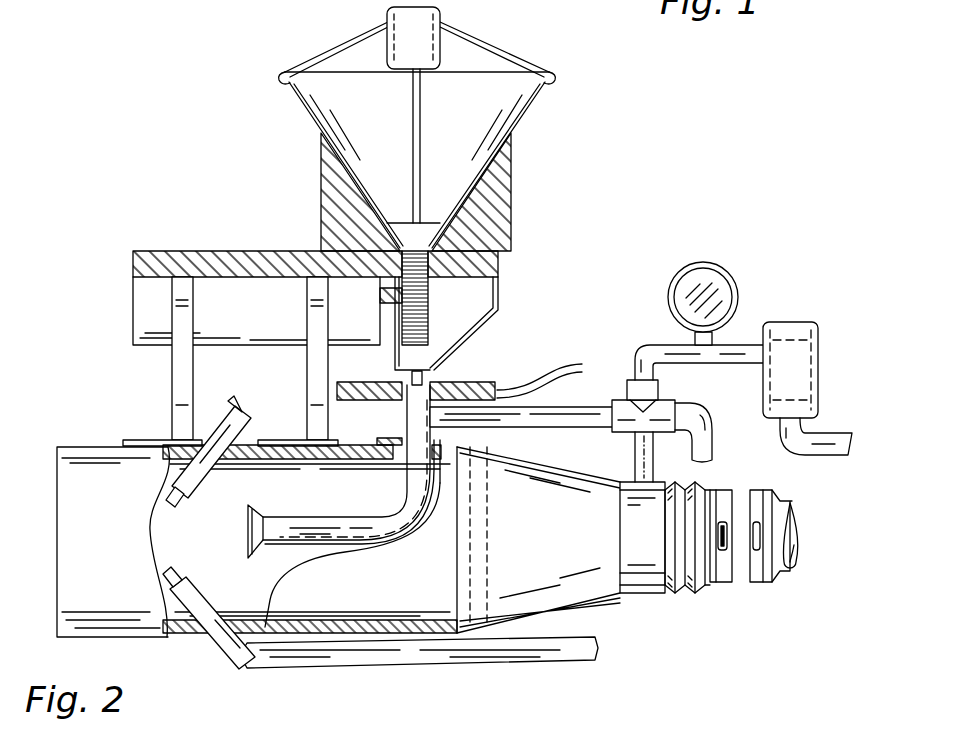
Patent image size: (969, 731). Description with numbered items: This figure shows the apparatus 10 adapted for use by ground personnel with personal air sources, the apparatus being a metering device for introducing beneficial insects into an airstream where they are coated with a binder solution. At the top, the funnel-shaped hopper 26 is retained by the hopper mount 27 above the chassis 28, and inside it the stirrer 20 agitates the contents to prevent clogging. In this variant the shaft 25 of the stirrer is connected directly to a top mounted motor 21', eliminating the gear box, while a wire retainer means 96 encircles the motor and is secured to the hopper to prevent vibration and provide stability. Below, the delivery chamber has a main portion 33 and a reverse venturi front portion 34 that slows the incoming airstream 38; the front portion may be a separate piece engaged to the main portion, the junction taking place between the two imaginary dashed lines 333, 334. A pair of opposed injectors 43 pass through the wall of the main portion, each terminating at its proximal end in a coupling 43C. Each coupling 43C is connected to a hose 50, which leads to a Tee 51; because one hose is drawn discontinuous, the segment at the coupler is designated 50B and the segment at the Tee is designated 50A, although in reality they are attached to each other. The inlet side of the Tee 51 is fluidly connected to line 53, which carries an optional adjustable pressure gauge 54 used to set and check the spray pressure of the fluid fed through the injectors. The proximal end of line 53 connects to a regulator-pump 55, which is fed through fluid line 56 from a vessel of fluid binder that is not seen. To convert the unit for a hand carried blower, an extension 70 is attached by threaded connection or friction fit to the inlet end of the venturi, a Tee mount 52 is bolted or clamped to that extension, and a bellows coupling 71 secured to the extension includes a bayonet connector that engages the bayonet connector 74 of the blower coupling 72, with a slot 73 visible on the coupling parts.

The apparatus 10 is at (145, 212).
The stirrer 20 is at (397, 222).
The top mounted motor 21' is at (453, 34).
The shaft 25 is at (421, 105).
The hopper 26 is at (523, 110).
The hopper mount 27 is at (508, 213).
The chassis 28 is at (497, 258).
The main portion 33 is at (117, 590).
The reverse venturi front portion 34 is at (562, 607).
The incoming airstream 38 is at (505, 548).
The injector 43 is at (220, 637).
The coupling 43C is at (243, 410).
The hose 50 is at (582, 412).
The hose segment 50A is at (700, 441).
The hose segment 50B is at (402, 657).
The Tee 51 is at (663, 407).
The Tee mount 52 is at (640, 455).
The line 53 is at (652, 350).
The pressure gauge 54 is at (708, 262).
The regulator-pump 55 is at (788, 343).
The fluid line 56 is at (830, 448).
The extension 70 is at (667, 593).
The bellows coupling 71 is at (720, 583).
The blower coupling 72 is at (762, 578).
The slot 73 is at (723, 540).
The bayonet connector 74 is at (757, 538).
The wire retainer means 96 is at (503, 50).
The imaginary dashed line 333 is at (458, 572).
The imaginary dashed line 334 is at (487, 518).